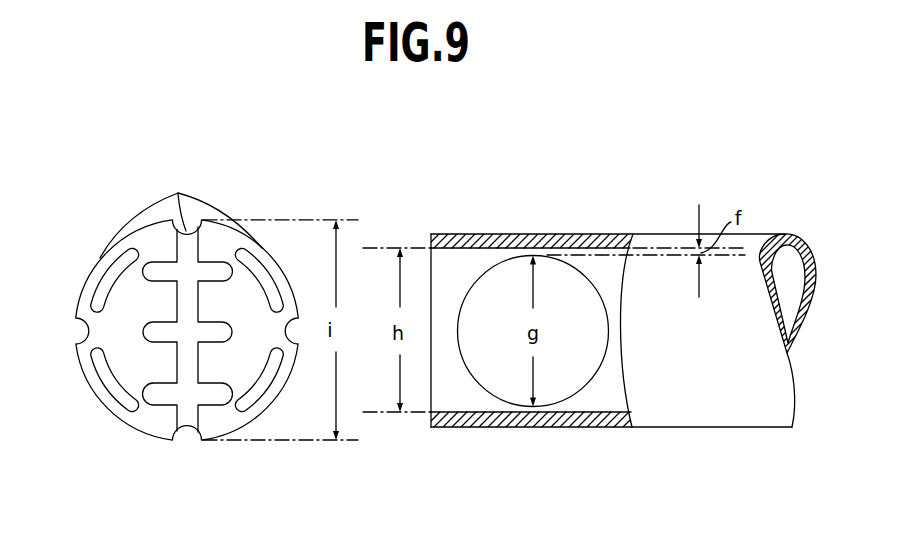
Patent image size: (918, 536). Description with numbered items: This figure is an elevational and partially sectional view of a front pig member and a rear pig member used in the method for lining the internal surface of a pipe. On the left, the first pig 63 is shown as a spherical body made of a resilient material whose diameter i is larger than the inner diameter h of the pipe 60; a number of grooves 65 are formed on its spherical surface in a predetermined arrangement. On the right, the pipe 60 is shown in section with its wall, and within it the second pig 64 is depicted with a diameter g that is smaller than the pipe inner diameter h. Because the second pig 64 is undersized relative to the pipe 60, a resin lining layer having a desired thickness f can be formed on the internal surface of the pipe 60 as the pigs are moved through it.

The pipe 60 is at (512, 234).
The first pig 63 is at (139, 364).
The second pig 64 is at (573, 375).
The grooves 65 is at (181, 210).